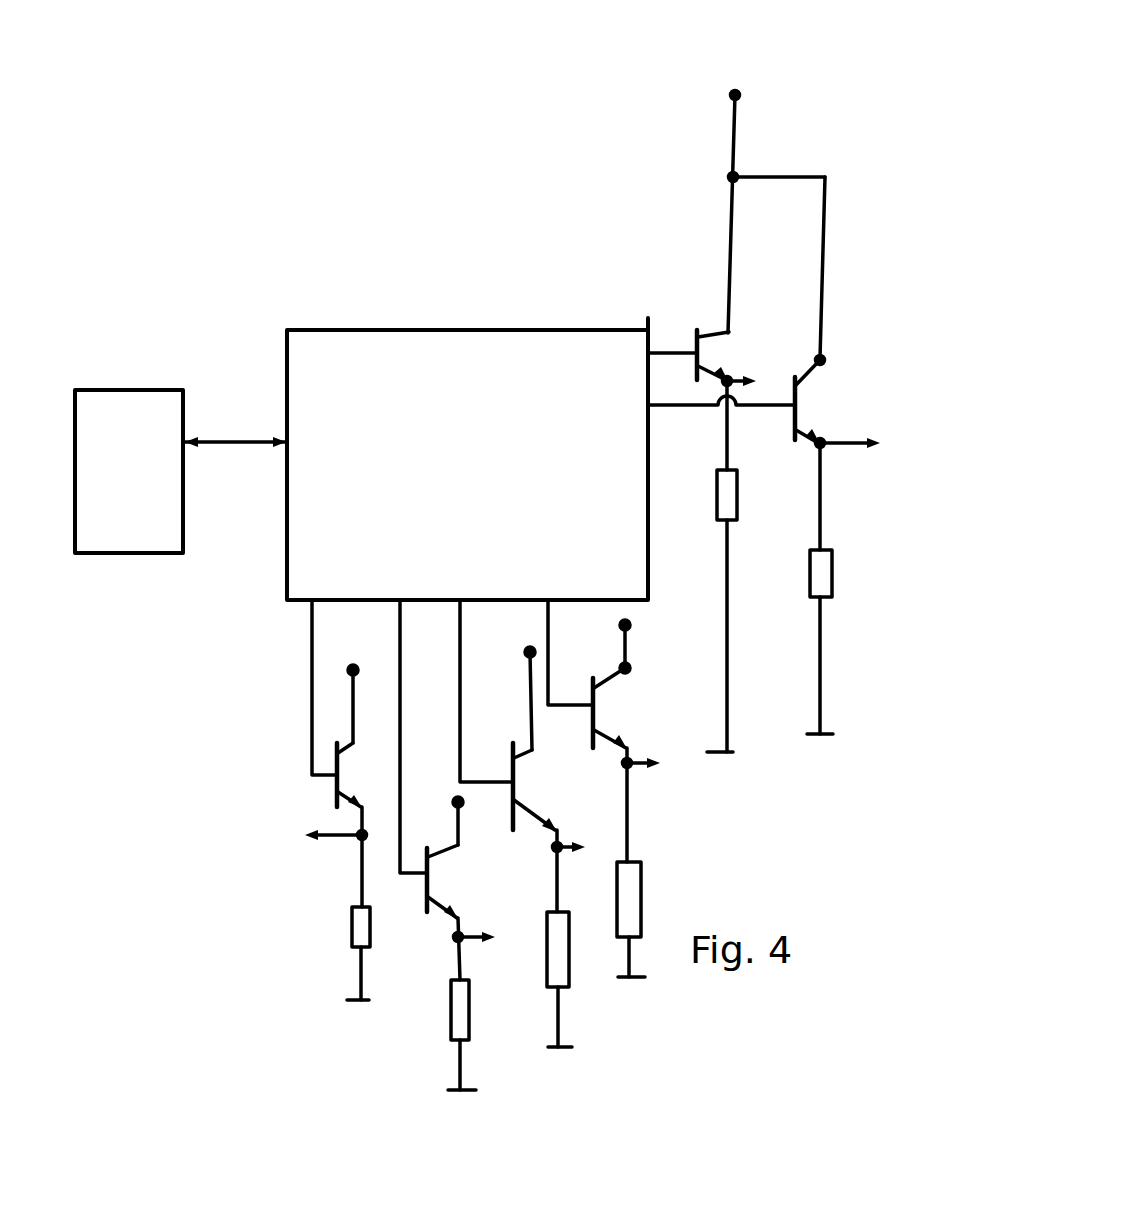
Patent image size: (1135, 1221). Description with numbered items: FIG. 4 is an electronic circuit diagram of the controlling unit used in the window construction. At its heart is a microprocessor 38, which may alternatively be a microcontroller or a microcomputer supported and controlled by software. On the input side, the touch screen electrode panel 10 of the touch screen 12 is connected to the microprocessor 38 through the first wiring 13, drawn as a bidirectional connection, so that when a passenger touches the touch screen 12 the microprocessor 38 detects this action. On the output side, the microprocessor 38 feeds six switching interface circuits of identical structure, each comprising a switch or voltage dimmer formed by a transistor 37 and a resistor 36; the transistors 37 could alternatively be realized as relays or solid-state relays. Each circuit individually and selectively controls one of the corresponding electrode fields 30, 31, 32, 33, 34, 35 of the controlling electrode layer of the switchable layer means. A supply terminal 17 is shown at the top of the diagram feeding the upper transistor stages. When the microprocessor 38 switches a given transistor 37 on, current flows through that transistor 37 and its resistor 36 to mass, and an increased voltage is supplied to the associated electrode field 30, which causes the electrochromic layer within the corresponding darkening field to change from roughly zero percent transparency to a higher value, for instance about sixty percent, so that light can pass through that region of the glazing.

The touch screen electrode panel 10 is at (129, 442).
The touch screen 12 is at (133, 440).
The first wiring 13 is at (228, 440).
The supply voltage terminal 17 is at (735, 95).
The electrode field 30 is at (759, 373).
The electrode field 31 is at (869, 440).
The electrode field 32 is at (663, 757).
The electrode field 33 is at (589, 846).
The electrode field 34 is at (496, 933).
The electrode field 35 is at (313, 833).
The resistor 36 is at (730, 520).
The transistor 37 is at (707, 322).
The microprocessor 38 is at (383, 352).